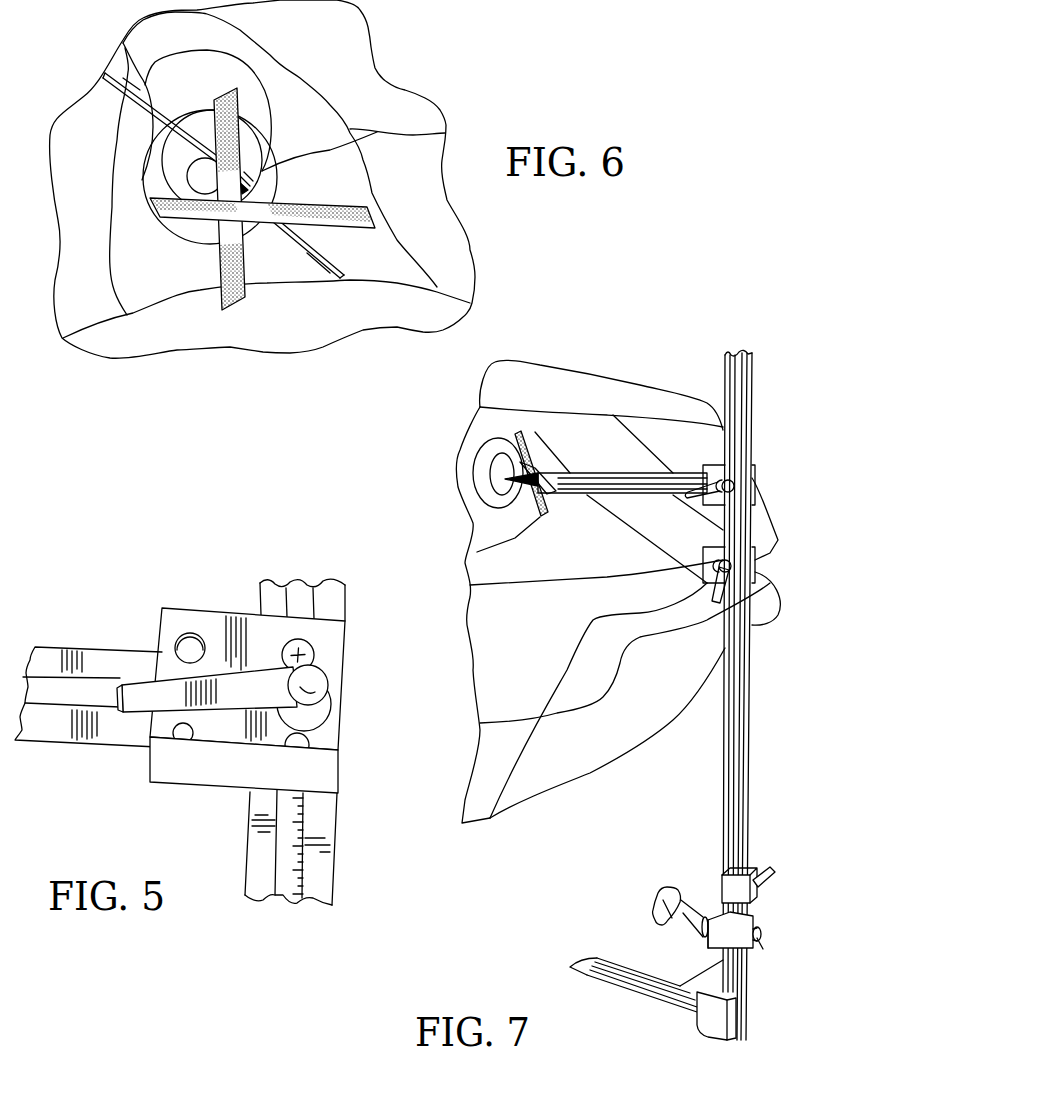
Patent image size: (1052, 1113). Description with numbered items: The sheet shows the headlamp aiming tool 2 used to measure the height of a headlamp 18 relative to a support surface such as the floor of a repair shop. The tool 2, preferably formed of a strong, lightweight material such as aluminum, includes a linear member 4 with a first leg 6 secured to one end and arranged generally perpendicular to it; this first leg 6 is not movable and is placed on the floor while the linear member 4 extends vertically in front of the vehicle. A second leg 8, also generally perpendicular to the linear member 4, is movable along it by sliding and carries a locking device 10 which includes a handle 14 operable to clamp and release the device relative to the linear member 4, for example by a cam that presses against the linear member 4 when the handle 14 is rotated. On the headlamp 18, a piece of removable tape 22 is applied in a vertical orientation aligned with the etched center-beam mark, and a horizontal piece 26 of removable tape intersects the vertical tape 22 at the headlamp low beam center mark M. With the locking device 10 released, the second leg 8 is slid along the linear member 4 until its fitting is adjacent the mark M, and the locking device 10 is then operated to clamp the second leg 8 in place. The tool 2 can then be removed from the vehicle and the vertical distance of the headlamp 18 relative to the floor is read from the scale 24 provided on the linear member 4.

In FIG. 7, the headlamp aiming tool 2 is at (595, 695).
In FIG. 5, the linear member 4 is at (328, 747).
In FIG. 7, the linear member 4 is at (752, 687).
In FIG. 7, the first leg 6 is at (622, 990).
In FIG. 7, the second leg 8 is at (543, 427).
In FIG. 5, the locking device 10 is at (214, 671).
In FIG. 7, the locking device 10 is at (730, 470).
In FIG. 5, the handle 14 is at (223, 667).
In FIG. 6, the headlamp 18 is at (141, 90).
In FIG. 7, the headlamp 18 is at (505, 479).
In FIG. 6, the removable tape 22 is at (238, 105).
In FIG. 7, the removable tape 22 is at (533, 430).
In FIG. 5, the scale 24 is at (302, 885).
In FIG. 6, the horizontal piece of removable tape 26 is at (348, 223).
In FIG. 7, the horizontal piece of removable tape 26 is at (527, 518).
In FIG. 6, the headlamp low beam center mark M is at (260, 200).